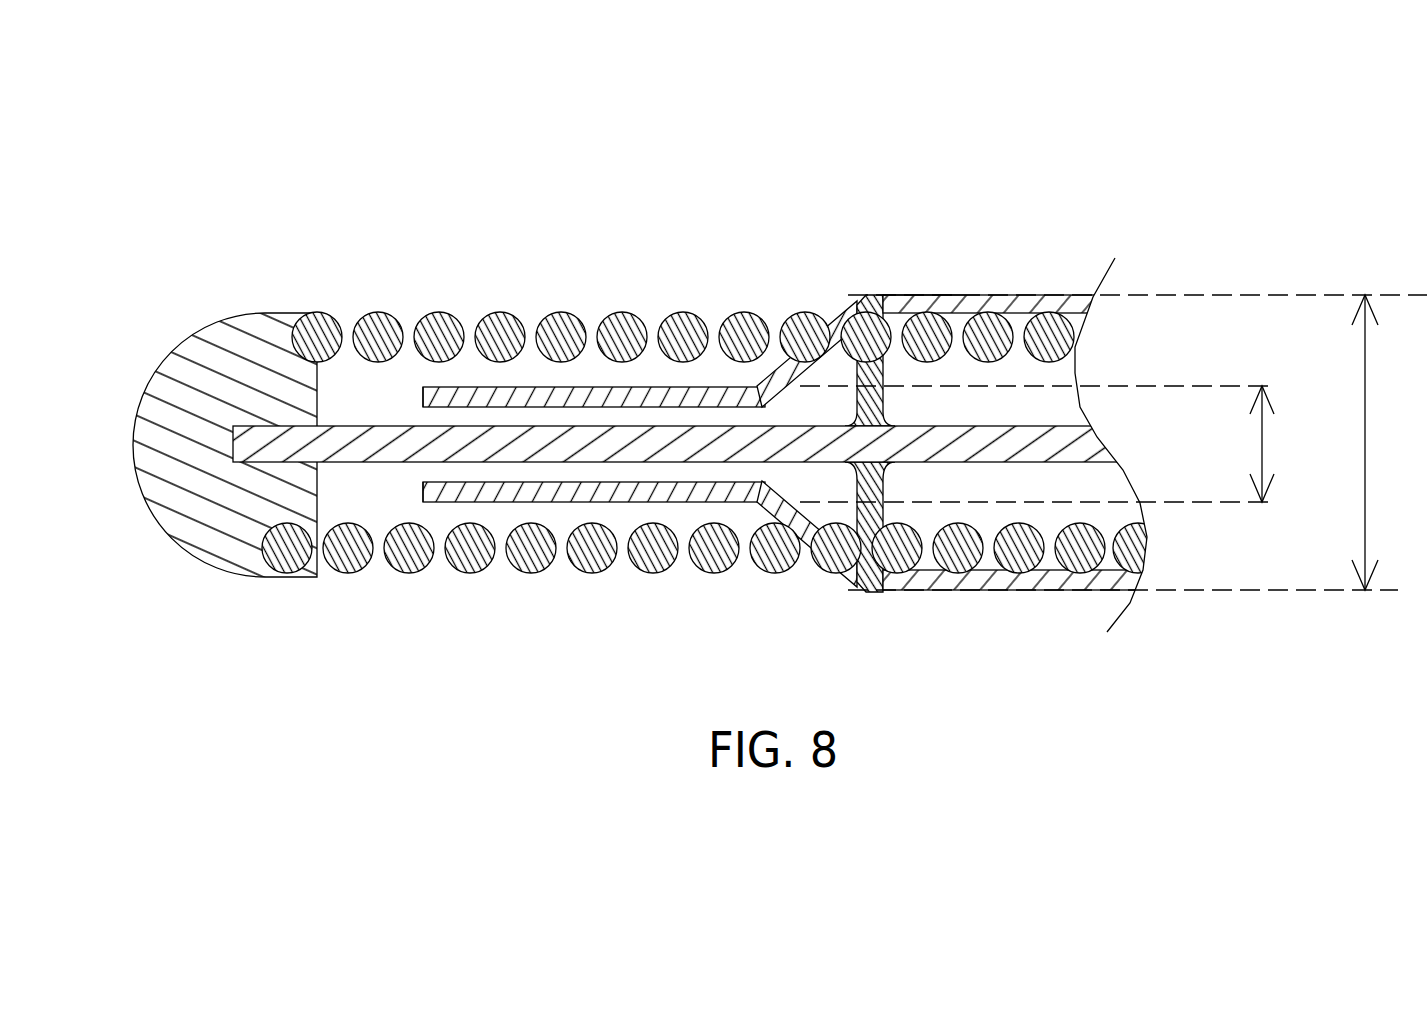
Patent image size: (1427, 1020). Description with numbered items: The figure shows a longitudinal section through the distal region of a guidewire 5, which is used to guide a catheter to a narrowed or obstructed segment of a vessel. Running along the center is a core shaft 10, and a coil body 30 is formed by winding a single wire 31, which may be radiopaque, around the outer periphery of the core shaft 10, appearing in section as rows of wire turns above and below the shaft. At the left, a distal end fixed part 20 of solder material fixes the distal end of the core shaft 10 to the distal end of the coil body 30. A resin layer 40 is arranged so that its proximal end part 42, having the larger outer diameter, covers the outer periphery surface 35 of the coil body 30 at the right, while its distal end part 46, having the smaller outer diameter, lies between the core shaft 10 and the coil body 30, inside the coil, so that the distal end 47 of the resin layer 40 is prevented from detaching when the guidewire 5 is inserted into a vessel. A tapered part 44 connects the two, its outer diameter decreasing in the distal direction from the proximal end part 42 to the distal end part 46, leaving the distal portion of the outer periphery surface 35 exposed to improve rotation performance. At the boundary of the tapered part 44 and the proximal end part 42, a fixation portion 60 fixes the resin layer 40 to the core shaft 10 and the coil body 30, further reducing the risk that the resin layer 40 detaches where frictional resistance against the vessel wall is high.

The guidewire 5 is at (337, 237).
The core shaft 10 is at (1097, 452).
The distal end fixed part 20 is at (162, 380).
The coil body 30 is at (1073, 345).
The single wire 31 is at (712, 548).
The outer periphery surface 35 is at (624, 312).
The resin layer 40 is at (1025, 295).
The proximal end part 42 is at (890, 295).
The tapered part 44 is at (770, 386).
The distal end part 46 is at (577, 384).
The distal end 47 is at (421, 384).
The fixation portion 60 is at (873, 592).